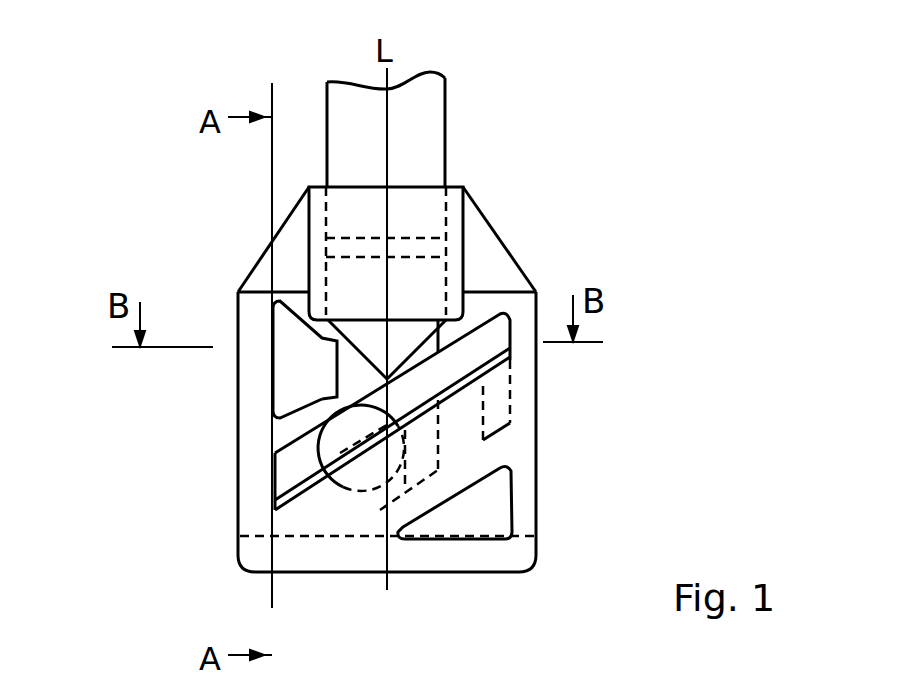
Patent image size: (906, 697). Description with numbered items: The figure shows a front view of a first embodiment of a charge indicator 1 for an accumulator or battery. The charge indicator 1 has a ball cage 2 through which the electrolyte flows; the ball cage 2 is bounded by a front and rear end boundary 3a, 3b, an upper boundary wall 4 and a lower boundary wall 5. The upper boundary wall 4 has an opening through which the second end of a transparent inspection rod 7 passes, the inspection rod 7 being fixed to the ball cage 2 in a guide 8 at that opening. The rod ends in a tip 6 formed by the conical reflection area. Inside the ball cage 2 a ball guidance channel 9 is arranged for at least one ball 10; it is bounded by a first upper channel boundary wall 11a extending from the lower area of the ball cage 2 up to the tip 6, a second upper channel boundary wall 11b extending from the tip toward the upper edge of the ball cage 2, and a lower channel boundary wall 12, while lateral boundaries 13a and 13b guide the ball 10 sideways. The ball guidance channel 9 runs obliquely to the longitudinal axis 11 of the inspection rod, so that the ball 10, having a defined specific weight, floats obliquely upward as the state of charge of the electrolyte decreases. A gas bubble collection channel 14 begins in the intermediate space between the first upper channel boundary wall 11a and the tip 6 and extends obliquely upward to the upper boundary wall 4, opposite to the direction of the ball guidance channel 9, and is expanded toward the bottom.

The charge indicator 1 is at (178, 193).
The ball cage 2 is at (645, 441).
The front end boundary 3a is at (238, 497).
The rear end boundary 3b is at (537, 392).
The upper boundary wall 4 is at (238, 290).
The lower boundary wall 5 is at (493, 560).
The tip 6 is at (398, 352).
The inspection rod 7 is at (420, 133).
The guide 8 is at (317, 220).
The ball guidance channel 9 is at (325, 517).
The ball 10 is at (367, 473).
The longitudinal axis 11 is at (387, 155).
The first upper channel boundary wall 11a is at (310, 417).
The second upper channel boundary wall 11b is at (470, 320).
The lower channel boundary wall 12 is at (432, 492).
The lateral boundary 13a is at (300, 458).
The lateral boundary 13b is at (288, 520).
The gas bubble collection channel 14 is at (318, 363).